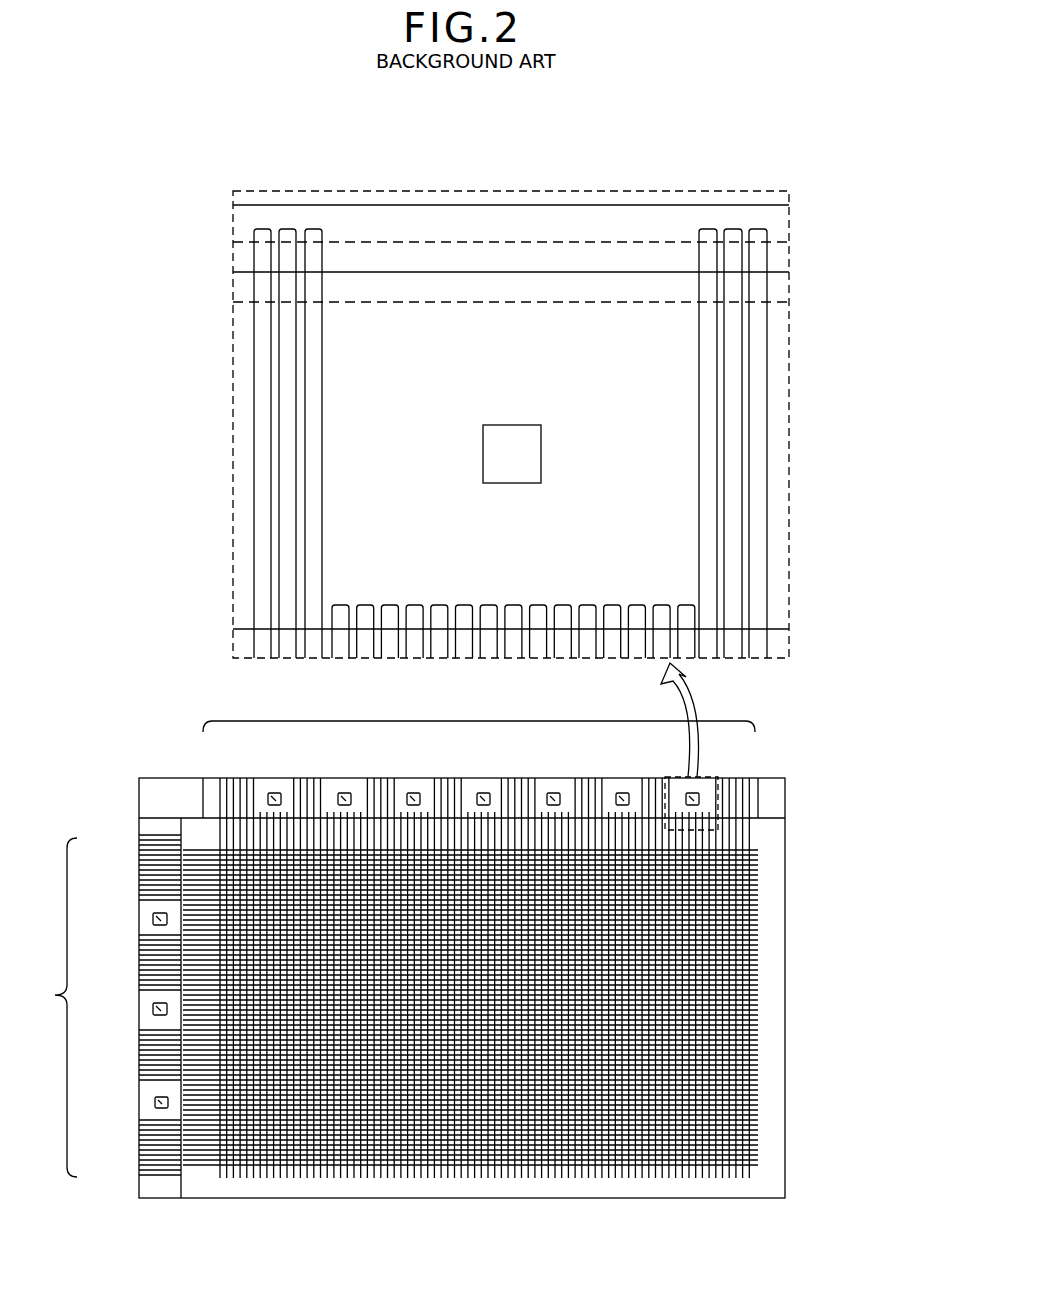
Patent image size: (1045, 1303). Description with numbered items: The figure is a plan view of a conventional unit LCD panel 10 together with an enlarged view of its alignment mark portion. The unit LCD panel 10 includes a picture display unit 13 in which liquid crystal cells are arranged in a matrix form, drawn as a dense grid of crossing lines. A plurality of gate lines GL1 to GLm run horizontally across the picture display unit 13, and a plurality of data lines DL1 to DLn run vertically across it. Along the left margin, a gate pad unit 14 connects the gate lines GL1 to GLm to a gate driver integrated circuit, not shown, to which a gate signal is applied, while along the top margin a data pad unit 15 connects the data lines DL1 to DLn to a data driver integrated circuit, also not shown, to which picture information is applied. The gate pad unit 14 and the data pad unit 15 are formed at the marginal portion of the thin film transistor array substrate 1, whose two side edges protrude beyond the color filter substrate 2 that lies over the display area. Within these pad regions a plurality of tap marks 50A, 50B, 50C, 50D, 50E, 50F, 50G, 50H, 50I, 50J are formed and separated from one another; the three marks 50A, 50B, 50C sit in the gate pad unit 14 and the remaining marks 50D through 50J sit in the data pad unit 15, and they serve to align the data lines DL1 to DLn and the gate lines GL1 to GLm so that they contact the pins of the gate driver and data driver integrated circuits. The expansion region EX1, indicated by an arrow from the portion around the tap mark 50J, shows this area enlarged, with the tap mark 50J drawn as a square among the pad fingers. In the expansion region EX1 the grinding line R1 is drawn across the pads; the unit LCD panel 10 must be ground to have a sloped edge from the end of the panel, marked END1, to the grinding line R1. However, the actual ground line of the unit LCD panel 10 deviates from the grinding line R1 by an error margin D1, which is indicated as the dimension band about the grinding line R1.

The thin film transistor array substrate 1 is at (162, 792).
The color filter substrate 2 is at (197, 828).
The unit LCD panel 10 is at (805, 1197).
The picture display unit 13 is at (480, 998).
The gate pad unit 14 is at (54, 1007).
The data pad unit 15 is at (479, 710).
The tap mark 50A is at (153, 919).
The tap mark 50B is at (153, 1009).
The tap mark 50C is at (155, 1102).
The tap mark 50D is at (275, 793).
The tap mark 50E is at (345, 793).
The tap mark 50F is at (414, 793).
The tap mark 50G is at (484, 793).
The tap mark 50H is at (554, 793).
The tap mark 50I is at (623, 793).
The tap mark 50J is at (695, 793).
The grinding line R1 is at (510, 272).
The end of repair line END1 is at (678, 205).
The error margin D1 is at (792, 242).
The expansion region EX1 is at (806, 567).
The gate line GL1 is at (814, 1148).
The gate line GLm is at (820, 1161).
The data line DL1 is at (726, 1215).
The data line DLn is at (750, 1216).